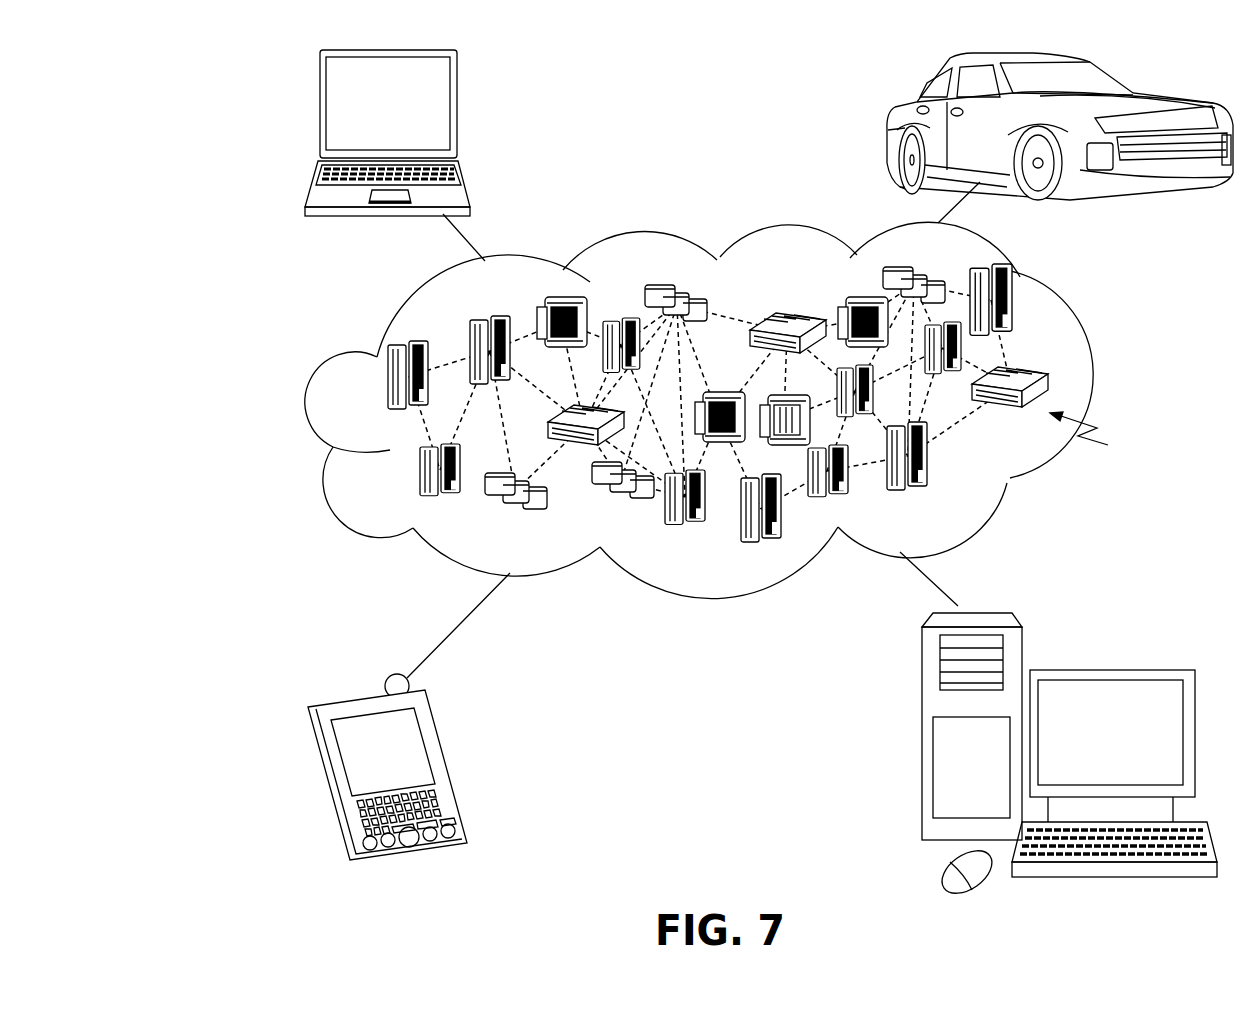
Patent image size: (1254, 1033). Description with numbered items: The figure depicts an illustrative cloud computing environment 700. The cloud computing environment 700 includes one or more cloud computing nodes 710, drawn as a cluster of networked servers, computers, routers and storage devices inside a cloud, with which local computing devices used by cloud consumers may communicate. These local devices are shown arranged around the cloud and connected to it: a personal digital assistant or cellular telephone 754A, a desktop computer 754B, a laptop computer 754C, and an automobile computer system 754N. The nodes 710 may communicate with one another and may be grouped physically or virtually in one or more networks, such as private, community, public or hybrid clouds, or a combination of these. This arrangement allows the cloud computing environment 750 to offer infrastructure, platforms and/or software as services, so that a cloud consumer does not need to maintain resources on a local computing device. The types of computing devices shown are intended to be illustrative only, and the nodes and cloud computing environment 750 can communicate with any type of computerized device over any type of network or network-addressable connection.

The cloud computing environment 700 is at (152, 72).
The cloud computing environment 750 is at (1110, 383).
The cloud computing nodes 710 is at (1108, 445).
The personal digital assistant (PDA) or cellular telephone 754A is at (447, 762).
The desktop computer 754B is at (1110, 668).
The laptop computer 754C is at (457, 115).
The automobile computer system 754N is at (890, 128).